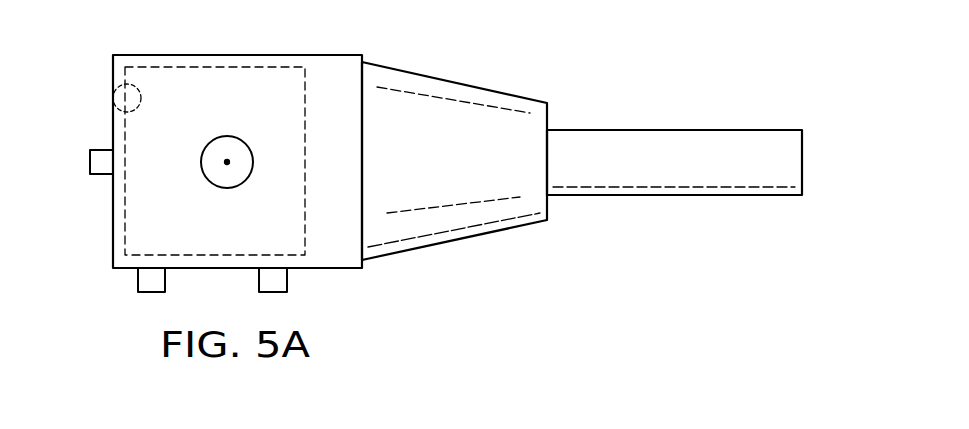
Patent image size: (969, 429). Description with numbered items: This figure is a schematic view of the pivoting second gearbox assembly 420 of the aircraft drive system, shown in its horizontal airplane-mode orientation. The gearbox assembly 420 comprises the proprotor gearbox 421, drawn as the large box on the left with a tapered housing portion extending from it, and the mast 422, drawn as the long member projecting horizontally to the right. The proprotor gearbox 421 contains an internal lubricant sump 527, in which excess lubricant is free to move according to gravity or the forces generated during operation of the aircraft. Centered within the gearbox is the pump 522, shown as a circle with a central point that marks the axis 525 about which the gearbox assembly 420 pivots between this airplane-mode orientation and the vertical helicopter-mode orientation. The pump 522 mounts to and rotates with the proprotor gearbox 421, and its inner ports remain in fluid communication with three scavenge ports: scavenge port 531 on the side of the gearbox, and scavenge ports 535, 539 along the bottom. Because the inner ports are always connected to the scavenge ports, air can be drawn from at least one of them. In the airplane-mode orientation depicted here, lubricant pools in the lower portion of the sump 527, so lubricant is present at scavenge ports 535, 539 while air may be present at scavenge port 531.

The second gearbox assembly 420 is at (520, 90).
The proprotor gearbox 421 is at (453, 82).
The mast 422 is at (672, 128).
The pump 522 is at (205, 166).
The axis 525 is at (228, 157).
The internal lubricant sump 527 is at (113, 93).
The scavenge port 531 is at (90, 162).
The scavenge port 535 is at (137, 283).
The scavenge port 539 is at (259, 283).